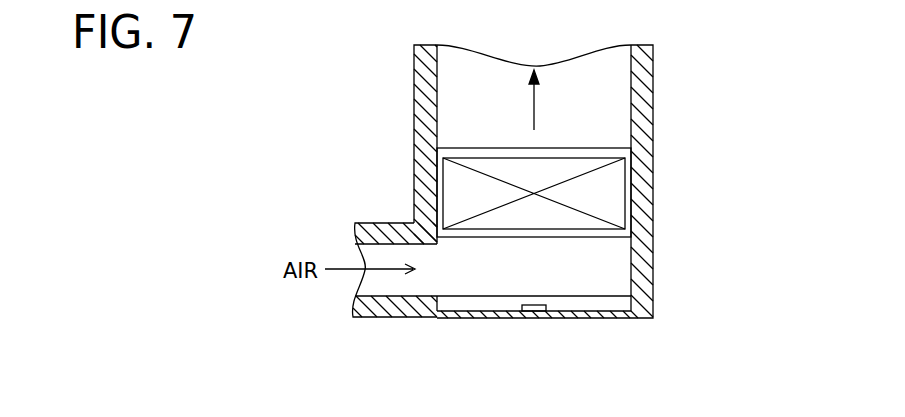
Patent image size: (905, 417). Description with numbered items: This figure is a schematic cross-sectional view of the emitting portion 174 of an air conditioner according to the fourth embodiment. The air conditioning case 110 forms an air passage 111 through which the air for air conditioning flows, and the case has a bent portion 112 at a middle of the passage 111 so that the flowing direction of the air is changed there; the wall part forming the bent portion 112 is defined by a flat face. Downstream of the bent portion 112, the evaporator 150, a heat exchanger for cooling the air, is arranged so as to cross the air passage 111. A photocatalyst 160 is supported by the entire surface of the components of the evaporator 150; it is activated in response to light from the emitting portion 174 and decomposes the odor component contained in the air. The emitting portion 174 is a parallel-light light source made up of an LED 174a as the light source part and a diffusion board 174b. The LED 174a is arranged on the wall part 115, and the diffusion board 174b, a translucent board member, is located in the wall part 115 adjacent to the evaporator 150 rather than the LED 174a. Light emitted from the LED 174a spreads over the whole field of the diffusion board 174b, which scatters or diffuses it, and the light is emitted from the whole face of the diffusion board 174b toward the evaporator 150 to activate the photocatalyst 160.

The air conditioning case 110 is at (390, 320).
The air passage 111 is at (459, 267).
The bent portion 112 is at (583, 320).
The wall part 115 is at (528, 320).
The evaporator 150 is at (610, 180).
The photocatalyst 160 is at (627, 203).
The emitting portion 174 is at (753, 255).
The LED 174a is at (548, 296).
The diffusion board 174b is at (612, 303).